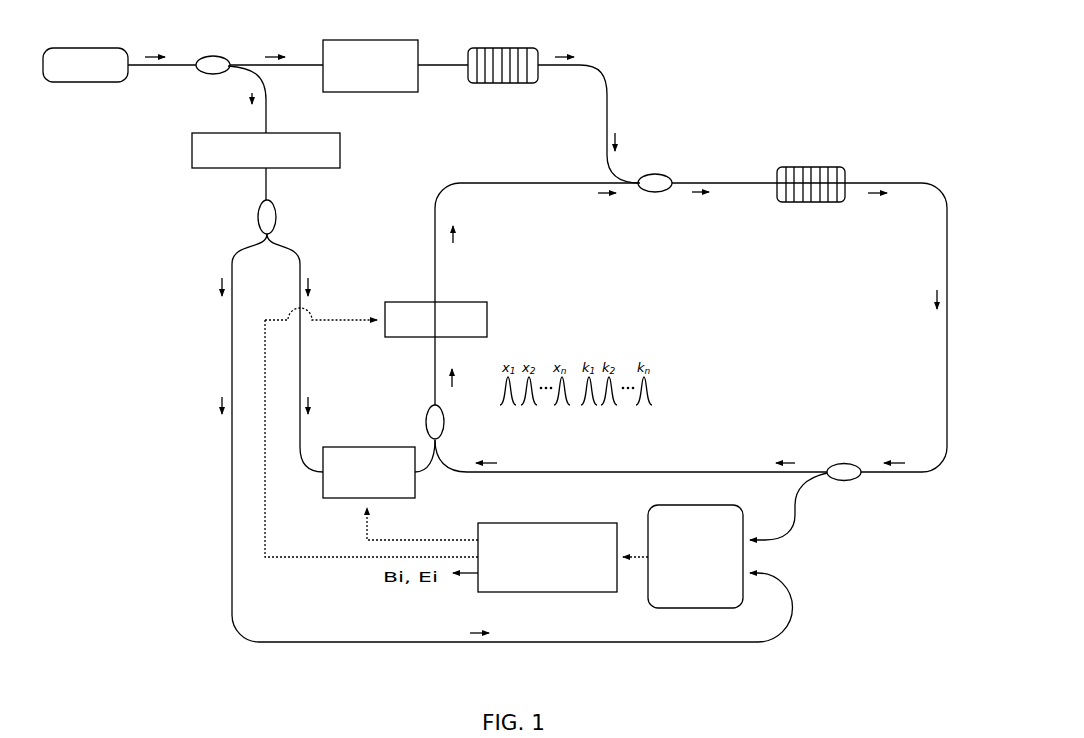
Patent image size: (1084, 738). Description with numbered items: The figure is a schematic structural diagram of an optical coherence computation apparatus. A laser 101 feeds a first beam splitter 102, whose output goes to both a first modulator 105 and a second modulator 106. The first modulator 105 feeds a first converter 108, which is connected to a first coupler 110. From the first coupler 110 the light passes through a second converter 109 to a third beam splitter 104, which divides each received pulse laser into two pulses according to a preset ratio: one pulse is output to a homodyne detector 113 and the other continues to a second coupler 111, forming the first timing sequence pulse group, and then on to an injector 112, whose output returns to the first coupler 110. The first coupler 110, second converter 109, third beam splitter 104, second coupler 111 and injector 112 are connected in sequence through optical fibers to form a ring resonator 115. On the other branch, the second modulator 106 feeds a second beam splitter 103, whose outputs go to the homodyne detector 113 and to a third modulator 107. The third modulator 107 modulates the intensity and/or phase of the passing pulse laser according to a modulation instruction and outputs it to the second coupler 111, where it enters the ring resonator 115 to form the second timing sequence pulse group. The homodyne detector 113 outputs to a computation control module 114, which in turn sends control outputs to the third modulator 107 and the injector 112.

The laser 101 is at (108, 47).
The first beam splitter 102 is at (218, 58).
The second beam splitter 103 is at (274, 208).
The third beam splitter 104 is at (850, 463).
The first modulator 105 is at (390, 38).
The second modulator 106 is at (292, 132).
The third modulator 107 is at (367, 445).
The first converter 108 is at (512, 48).
The second converter 109 is at (842, 165).
The first coupler 110 is at (657, 175).
The second coupler 111 is at (430, 405).
The injector 112 is at (478, 300).
The homodyne detector 113 is at (740, 509).
The computation control module 114 is at (550, 522).
The ring resonator 115 is at (933, 185).